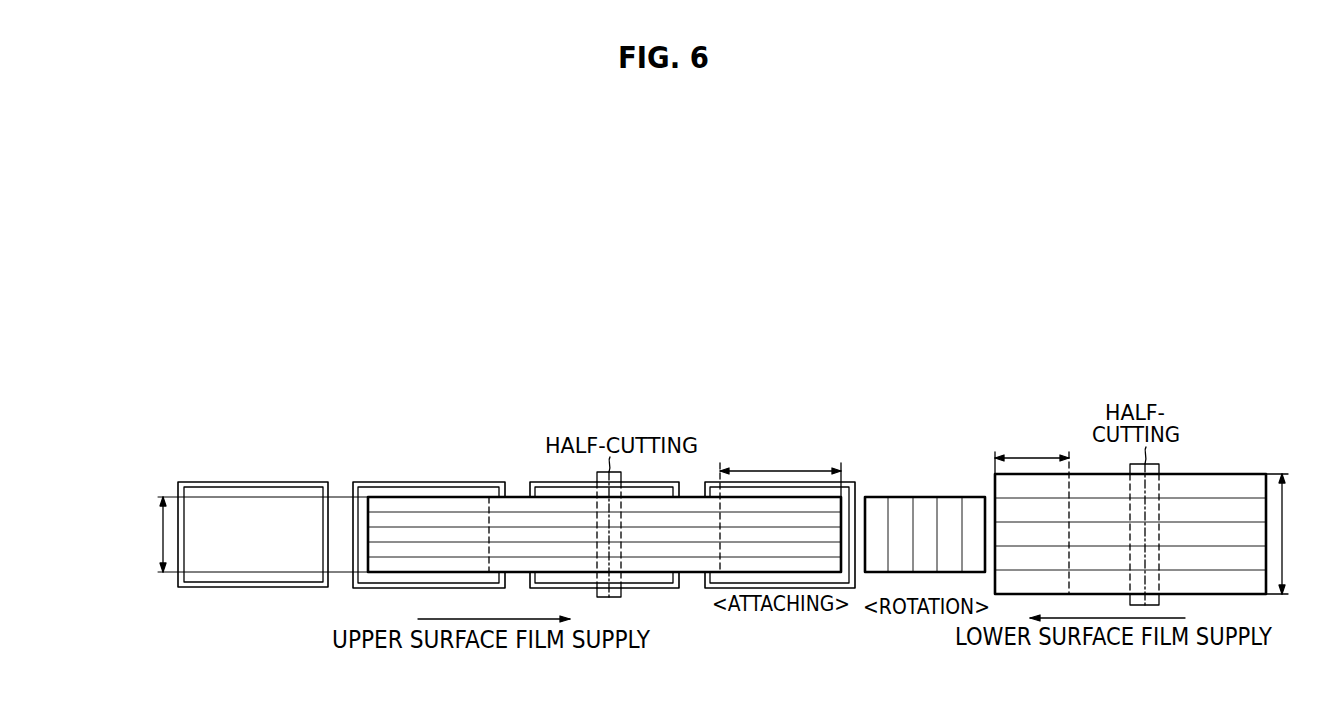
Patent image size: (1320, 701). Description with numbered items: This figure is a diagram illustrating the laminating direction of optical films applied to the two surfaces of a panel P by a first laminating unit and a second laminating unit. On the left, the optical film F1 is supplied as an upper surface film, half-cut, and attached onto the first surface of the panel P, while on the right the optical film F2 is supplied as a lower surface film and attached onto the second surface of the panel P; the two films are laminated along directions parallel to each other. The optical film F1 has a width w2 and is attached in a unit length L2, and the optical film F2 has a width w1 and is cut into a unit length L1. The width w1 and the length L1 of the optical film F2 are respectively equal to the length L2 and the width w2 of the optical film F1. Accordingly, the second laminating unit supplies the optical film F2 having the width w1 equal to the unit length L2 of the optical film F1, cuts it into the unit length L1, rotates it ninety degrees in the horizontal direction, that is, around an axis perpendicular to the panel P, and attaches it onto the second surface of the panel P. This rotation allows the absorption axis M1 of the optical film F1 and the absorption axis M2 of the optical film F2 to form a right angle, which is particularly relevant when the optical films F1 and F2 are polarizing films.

The panel P is at (290, 482).
The optical film F1 is at (408, 500).
The absorption axis M1 is at (513, 505).
The optical film F2 is at (946, 505).
The absorption axis M2 is at (887, 508).
The unit length L1 is at (1032, 511).
The unit length L2 is at (780, 506).
The width w1 is at (1289, 534).
The width w2 is at (150, 534).